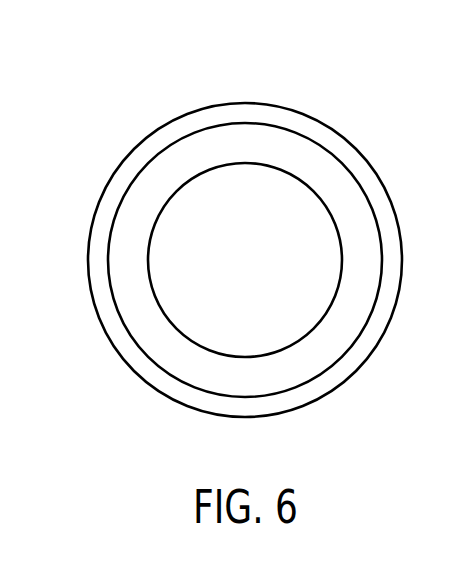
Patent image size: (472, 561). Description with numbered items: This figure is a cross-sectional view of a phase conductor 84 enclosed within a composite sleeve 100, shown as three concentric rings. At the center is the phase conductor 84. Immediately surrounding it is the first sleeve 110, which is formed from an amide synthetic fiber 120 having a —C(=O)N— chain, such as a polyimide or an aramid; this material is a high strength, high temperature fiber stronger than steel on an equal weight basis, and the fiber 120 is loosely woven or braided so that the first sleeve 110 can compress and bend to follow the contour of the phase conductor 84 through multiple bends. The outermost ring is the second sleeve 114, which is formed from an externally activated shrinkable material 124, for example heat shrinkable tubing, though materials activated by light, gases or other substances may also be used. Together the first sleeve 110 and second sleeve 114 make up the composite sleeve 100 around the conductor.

The composite sleeve 100 is at (90, 96).
The second sleeve 114 is at (279, 104).
The externally activated shrinkable material 124 is at (102, 193).
The amide synthetic fiber 120 is at (173, 378).
The first sleeve 110 is at (356, 349).
The phase conductor 84 is at (314, 225).